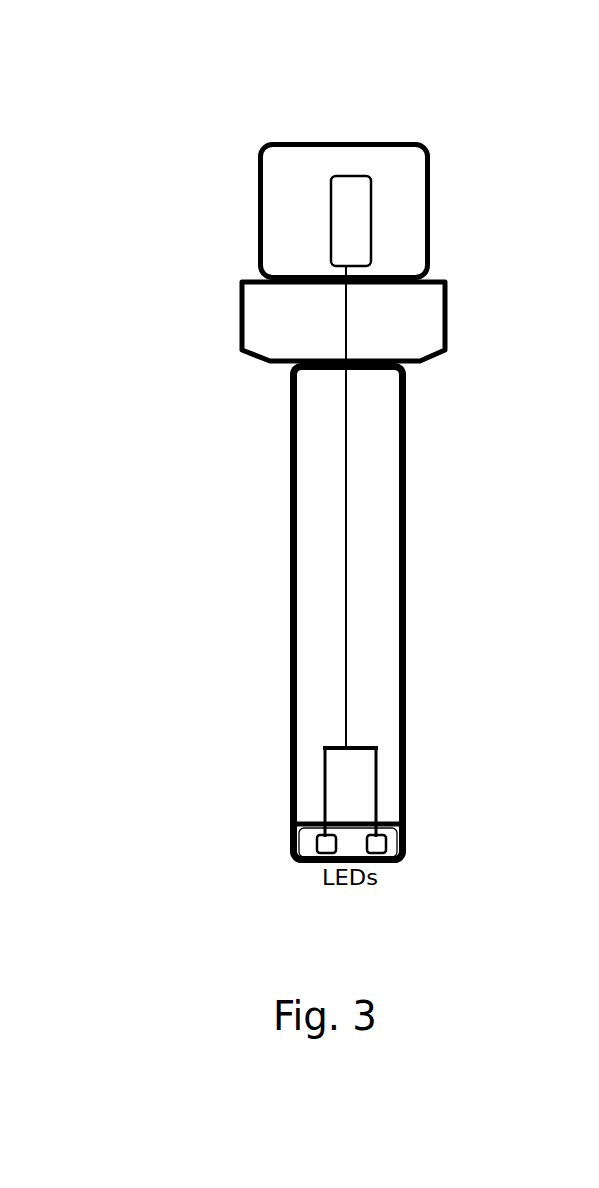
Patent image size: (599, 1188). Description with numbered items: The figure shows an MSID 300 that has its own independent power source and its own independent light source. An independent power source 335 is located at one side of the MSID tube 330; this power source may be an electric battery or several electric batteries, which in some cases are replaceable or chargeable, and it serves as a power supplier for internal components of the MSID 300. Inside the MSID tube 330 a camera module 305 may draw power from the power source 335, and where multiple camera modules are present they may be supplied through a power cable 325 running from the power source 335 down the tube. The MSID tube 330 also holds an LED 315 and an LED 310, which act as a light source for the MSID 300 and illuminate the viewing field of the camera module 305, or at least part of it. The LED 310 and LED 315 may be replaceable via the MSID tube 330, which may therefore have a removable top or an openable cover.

The MSID 300 is at (240, 120).
The camera module 305 is at (348, 839).
The LED 310 is at (398, 862).
The LED 315 is at (322, 852).
The power cable 325 is at (347, 631).
The MSID tube 330 is at (406, 515).
The independent power source 335 is at (343, 241).